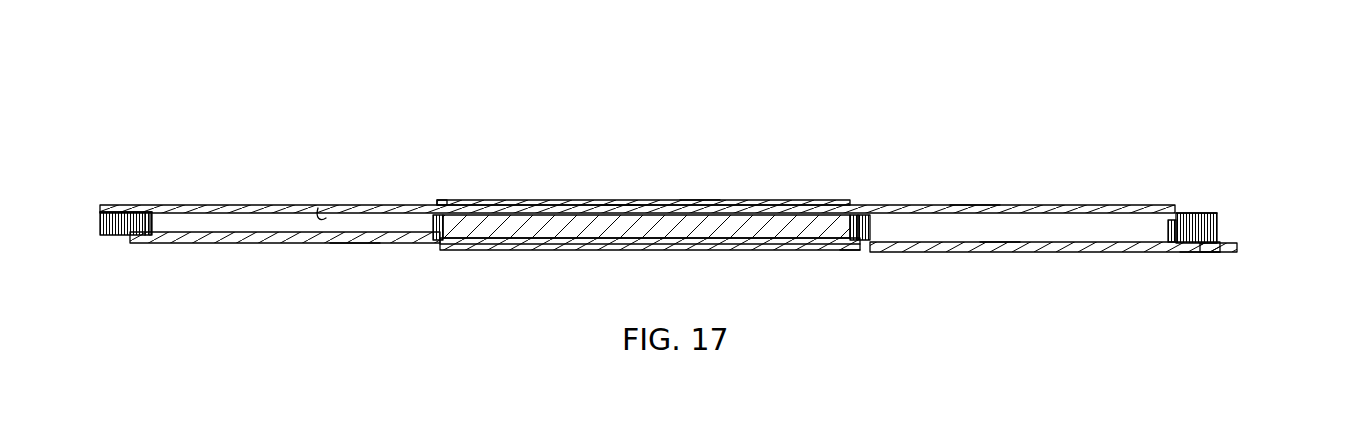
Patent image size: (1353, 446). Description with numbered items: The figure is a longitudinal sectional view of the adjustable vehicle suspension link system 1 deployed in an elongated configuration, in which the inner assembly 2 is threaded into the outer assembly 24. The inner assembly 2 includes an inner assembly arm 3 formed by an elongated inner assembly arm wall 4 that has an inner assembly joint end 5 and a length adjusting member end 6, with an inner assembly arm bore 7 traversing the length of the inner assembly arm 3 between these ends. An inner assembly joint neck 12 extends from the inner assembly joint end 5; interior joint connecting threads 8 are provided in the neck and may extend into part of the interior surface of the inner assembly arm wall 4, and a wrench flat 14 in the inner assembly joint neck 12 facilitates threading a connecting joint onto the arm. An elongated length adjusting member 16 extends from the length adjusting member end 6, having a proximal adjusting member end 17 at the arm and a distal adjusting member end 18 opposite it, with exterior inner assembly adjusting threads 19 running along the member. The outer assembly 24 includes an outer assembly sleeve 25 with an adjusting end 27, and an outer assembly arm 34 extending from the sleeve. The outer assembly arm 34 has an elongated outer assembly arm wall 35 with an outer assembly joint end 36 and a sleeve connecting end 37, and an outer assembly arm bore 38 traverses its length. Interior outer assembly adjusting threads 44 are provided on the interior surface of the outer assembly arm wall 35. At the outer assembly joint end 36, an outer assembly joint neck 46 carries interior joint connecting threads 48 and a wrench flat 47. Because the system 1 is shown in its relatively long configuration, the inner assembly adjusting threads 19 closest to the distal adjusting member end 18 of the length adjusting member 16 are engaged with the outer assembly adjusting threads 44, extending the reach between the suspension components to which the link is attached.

The adjustable vehicle suspension link system 1 is at (474, 118).
The inner assembly 2 is at (216, 195).
The inner assembly arm 3 is at (304, 262).
The inner assembly arm wall 4 is at (356, 243).
The inner assembly joint end 5 is at (125, 212).
The length adjusting member end 6 is at (492, 200).
The inner assembly arm bore 7 is at (318, 208).
The joint connecting threads 8 is at (143, 243).
The inner assembly joint neck 12 is at (100, 236).
The wrench flat 14 is at (118, 240).
The length adjusting member 16 is at (620, 198).
The proximal adjusting member end 17 is at (425, 240).
The distal adjusting member end 18 is at (853, 205).
The inner assembly adjusting threads 19 is at (730, 250).
The outer assembly 24 is at (698, 190).
The outer assembly sleeve 25 is at (582, 262).
The adjusting end 27 is at (443, 203).
The outer assembly arm 34 is at (977, 195).
The outer assembly arm wall 35 is at (903, 252).
The outer assembly joint end 36 is at (1200, 252).
The sleeve connecting end 37 is at (848, 250).
The outer assembly arm bore 38 is at (1000, 243).
The outer assembly adjusting threads 44 is at (893, 205).
The outer assembly joint neck 46 is at (1218, 243).
The wrench flat 47 is at (1210, 212).
The joint connecting threads 48 is at (1170, 242).